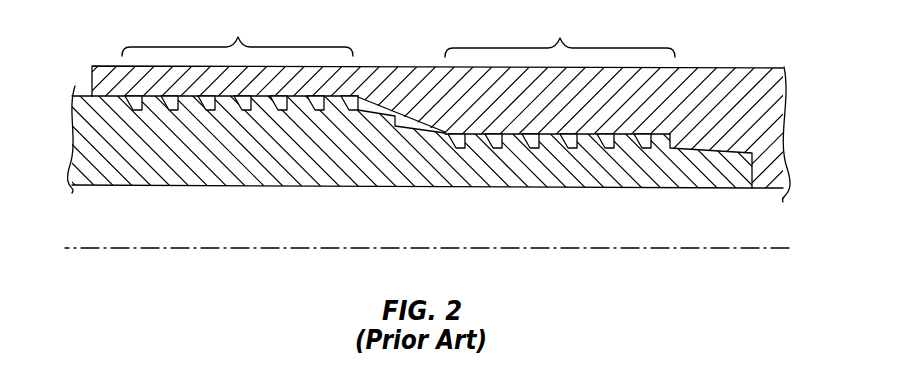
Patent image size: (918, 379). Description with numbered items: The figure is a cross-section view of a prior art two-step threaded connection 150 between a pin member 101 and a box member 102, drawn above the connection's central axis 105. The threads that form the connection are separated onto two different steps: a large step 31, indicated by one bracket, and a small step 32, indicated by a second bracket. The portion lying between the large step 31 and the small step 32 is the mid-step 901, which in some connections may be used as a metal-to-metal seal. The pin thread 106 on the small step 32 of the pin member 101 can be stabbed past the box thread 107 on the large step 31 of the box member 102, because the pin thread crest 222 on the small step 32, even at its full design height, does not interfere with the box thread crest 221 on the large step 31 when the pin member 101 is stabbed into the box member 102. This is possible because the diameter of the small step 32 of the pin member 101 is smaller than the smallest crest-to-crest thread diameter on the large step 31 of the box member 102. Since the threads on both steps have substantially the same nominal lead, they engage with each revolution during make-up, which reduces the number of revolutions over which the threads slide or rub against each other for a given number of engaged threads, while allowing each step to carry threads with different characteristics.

The two-step connection 150 is at (719, 23).
The pin member 101 is at (134, 169).
The box member 102 is at (754, 103).
The pin thread 106 is at (261, 105).
The box thread 107 is at (281, 100).
The box thread crest 221 is at (326, 103).
The pin thread crest 222 is at (474, 131).
The mid-step 901 is at (358, 104).
The axis 105 is at (582, 249).
The large step 31 is at (237, 35).
The small step 32 is at (560, 37).